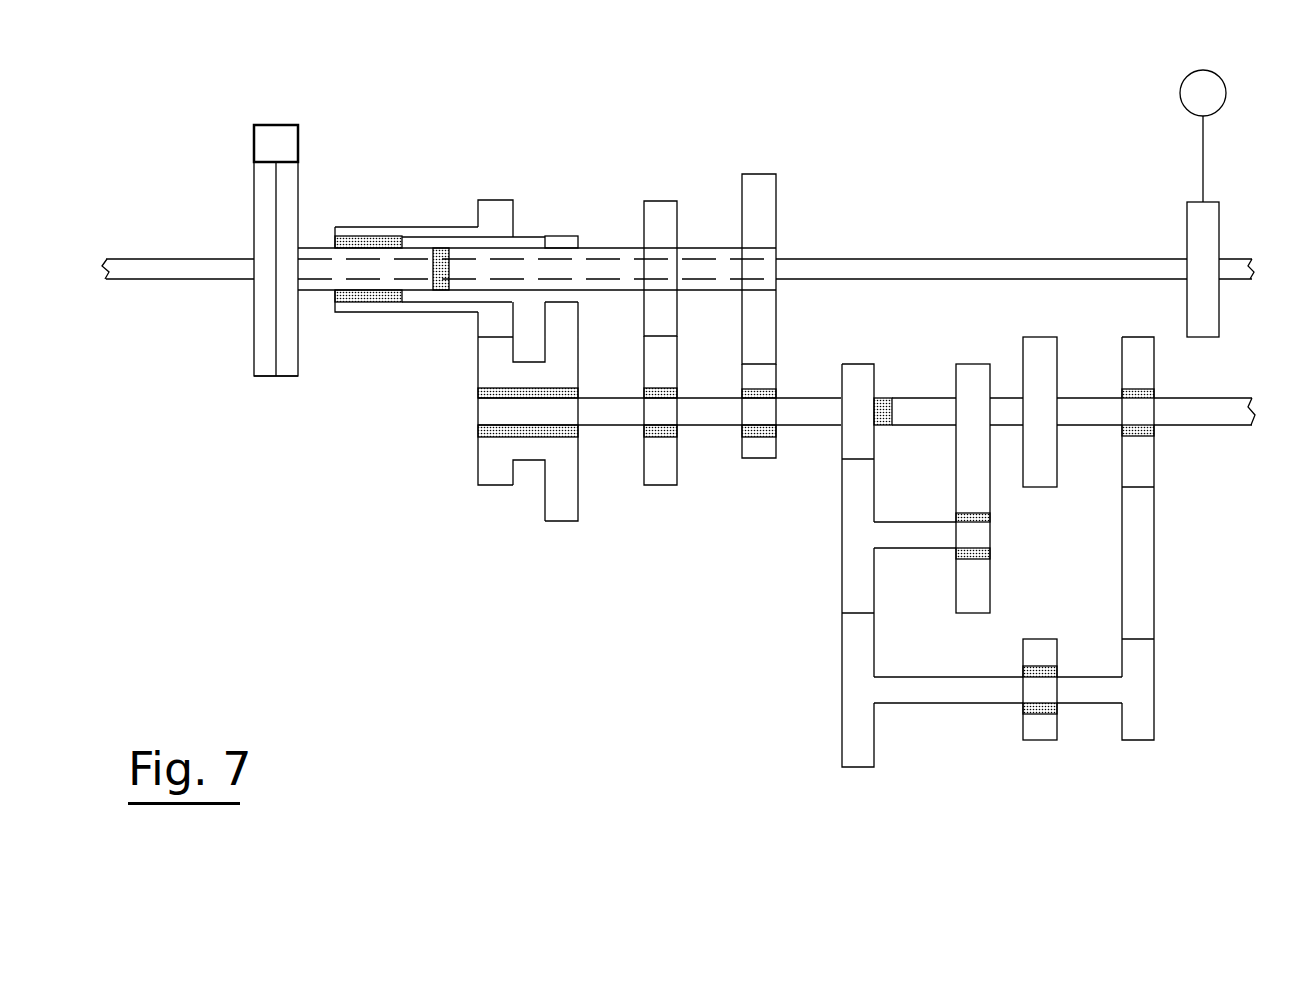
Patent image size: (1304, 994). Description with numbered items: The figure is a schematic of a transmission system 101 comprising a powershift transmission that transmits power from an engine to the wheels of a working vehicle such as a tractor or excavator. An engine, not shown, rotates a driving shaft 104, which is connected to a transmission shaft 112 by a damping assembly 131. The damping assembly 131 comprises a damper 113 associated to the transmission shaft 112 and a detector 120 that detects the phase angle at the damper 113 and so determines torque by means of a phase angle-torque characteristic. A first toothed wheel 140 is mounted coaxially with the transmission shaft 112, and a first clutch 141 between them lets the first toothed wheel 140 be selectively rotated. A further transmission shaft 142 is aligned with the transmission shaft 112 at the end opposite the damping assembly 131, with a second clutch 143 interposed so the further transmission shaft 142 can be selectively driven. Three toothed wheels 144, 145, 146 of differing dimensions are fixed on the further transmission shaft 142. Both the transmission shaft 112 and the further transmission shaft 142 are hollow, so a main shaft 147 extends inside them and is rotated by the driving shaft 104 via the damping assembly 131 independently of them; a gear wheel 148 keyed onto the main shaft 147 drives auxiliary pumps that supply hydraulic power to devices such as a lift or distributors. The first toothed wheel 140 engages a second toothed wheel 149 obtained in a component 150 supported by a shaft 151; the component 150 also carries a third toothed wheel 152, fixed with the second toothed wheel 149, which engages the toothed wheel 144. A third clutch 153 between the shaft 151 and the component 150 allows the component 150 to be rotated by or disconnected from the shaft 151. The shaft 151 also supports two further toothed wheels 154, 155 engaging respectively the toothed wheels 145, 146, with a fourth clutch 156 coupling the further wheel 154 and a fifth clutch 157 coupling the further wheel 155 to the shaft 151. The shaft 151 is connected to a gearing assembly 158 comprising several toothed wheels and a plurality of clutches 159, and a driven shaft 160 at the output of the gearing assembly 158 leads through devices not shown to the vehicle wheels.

The transmission system 101 is at (948, 77).
The driving shaft 104 is at (177, 258).
The transmission shaft 112 is at (315, 247).
The damper 113 is at (298, 345).
The detector 120 is at (281, 125).
The damping assembly 131 is at (228, 440).
The first toothed wheel 140 is at (492, 199).
The first clutch 141 is at (402, 242).
The further transmission shaft 142 is at (523, 238).
The second clutch 143 is at (440, 292).
The toothed wheel 144 is at (565, 236).
The toothed wheel 145 is at (658, 201).
The toothed wheel 146 is at (752, 174).
The main shaft 147 is at (862, 258).
The gear wheel 148 is at (1220, 233).
The second toothed wheel 149 is at (495, 486).
The component 150 is at (528, 460).
The shaft 151 is at (608, 428).
The third toothed wheel 152 is at (560, 521).
The third clutch 153 is at (478, 427).
The further toothed wheel 154 is at (660, 486).
The further toothed wheel 155 is at (762, 458).
The fourth clutch 156 is at (678, 428).
The fifth clutch 157 is at (777, 395).
The gearing assembly 158 is at (1208, 788).
The clutches 159 is at (883, 398).
The driven shaft 160 is at (1195, 427).